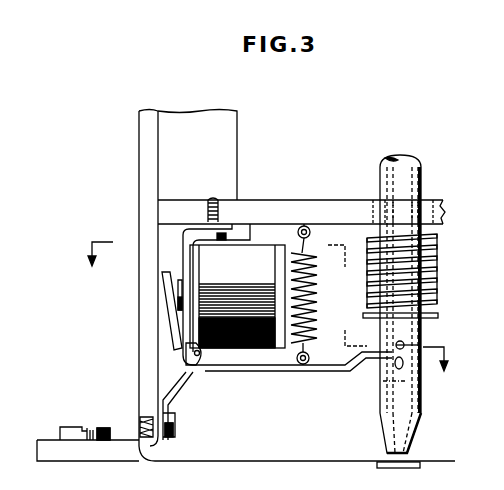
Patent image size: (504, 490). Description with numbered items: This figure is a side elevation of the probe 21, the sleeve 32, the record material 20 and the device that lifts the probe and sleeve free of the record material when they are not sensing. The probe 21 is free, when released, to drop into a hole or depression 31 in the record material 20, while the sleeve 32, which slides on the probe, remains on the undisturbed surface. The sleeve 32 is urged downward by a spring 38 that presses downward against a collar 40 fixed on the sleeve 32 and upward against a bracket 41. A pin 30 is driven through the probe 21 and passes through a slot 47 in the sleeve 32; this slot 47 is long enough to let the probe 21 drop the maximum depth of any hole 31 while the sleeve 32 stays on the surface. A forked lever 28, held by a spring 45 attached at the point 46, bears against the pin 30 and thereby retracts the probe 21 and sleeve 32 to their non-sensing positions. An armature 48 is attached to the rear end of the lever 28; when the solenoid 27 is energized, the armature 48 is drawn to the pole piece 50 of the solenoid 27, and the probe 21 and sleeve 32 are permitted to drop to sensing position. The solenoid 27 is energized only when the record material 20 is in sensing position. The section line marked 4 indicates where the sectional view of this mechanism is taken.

The section line 4- 4 is at (267, 314).
The record material 20 is at (392, 467).
The probe 21 is at (407, 160).
The solenoid 27 is at (238, 348).
The forked lever 28 is at (325, 371).
The pin 30 is at (404, 345).
The hole or depression 31 is at (396, 462).
The sleeve 32 is at (415, 426).
The spring 38 is at (433, 262).
The collar 40 is at (437, 317).
The bracket 41 is at (293, 207).
The spring 45 is at (318, 327).
The point 46 is at (294, 362).
The slot 47 is at (396, 366).
The armature 48 is at (165, 288).
The pole piece 50 is at (168, 308).